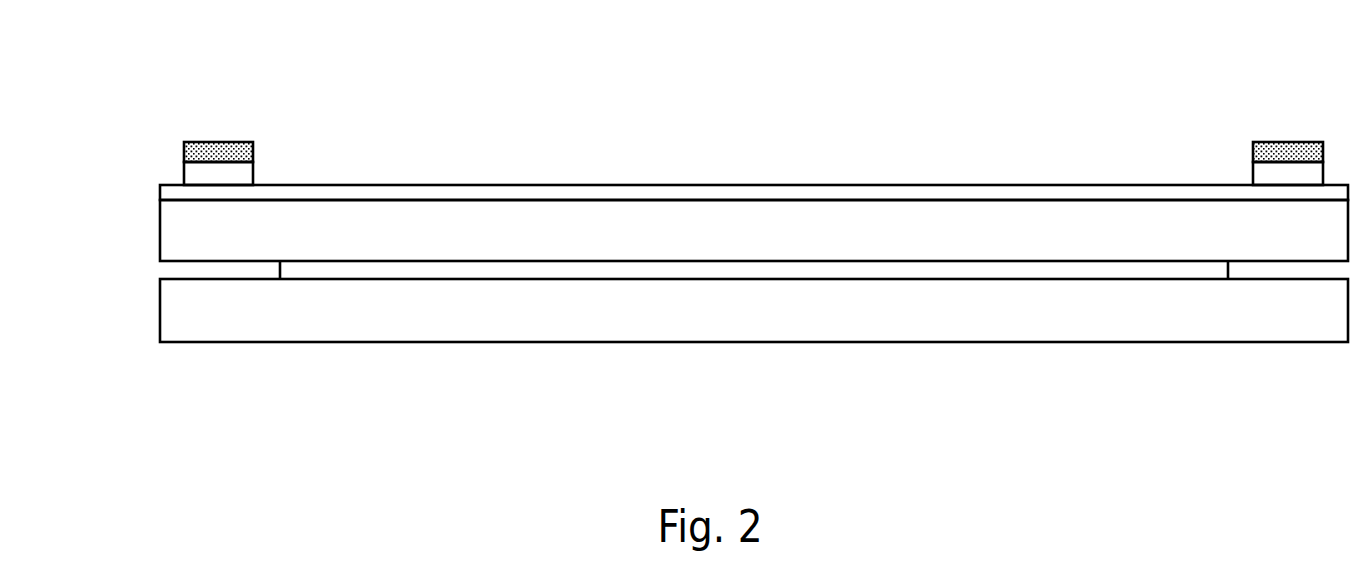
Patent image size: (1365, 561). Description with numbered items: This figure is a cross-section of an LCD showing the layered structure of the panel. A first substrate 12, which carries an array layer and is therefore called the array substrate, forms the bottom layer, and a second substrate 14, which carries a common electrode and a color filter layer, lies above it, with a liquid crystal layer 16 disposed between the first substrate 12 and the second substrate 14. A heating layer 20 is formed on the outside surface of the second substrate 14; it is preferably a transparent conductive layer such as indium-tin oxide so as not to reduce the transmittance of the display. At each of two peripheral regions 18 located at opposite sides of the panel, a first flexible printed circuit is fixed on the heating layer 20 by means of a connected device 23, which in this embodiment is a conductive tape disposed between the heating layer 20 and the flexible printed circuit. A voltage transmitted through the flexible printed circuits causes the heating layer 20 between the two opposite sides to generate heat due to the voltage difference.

The first substrate 12 is at (167, 320).
The second substrate 14 is at (167, 235).
The liquid crystal layer 16 is at (297, 275).
The peripheral region 18 is at (160, 52).
The heating layer 20 is at (167, 193).
The connected device 23 is at (195, 172).